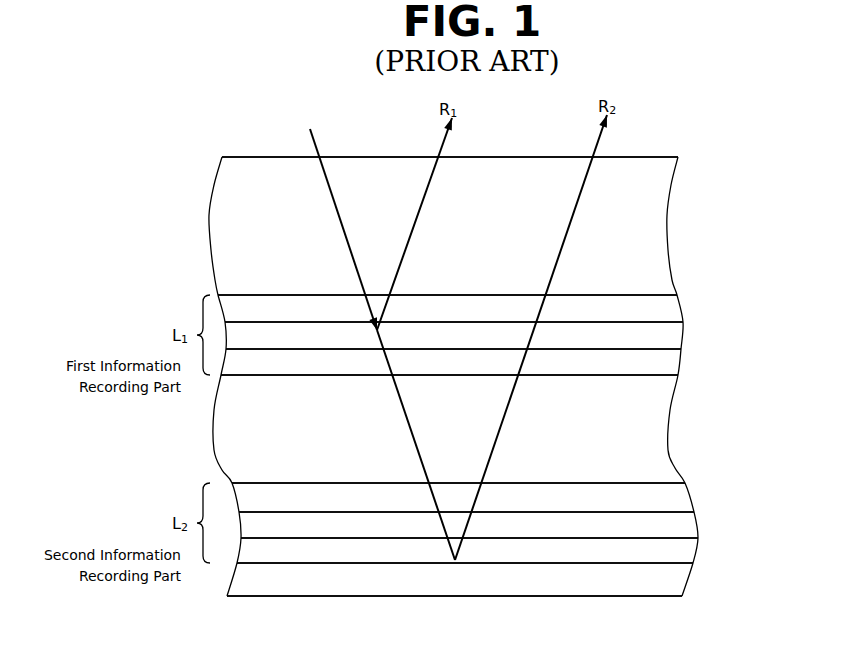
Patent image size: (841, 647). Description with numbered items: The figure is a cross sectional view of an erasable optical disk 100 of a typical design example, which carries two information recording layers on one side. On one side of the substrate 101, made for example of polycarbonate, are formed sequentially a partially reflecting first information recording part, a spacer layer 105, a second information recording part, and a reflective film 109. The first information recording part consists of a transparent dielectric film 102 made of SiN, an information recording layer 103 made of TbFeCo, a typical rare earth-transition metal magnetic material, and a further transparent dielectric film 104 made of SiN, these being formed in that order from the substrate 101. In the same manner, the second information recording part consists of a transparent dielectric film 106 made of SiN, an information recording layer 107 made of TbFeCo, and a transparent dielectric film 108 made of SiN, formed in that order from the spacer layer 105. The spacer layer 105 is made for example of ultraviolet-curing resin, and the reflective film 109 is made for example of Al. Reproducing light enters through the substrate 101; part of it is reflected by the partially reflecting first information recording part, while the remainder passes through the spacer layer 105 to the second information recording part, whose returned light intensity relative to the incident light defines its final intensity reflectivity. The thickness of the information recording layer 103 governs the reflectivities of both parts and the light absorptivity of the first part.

The optical disk 100 is at (667, 140).
The substrate 101 is at (655, 231).
The transparent dielectric film 102 is at (655, 317).
The information recording layer 103 is at (655, 344).
The transparent dielectric film 104 is at (655, 371).
The spacer layer 105 is at (655, 412).
The transparent dielectric film 106 is at (655, 507).
The information recording layer 107 is at (655, 534).
The transparent dielectric film 108 is at (655, 561).
The reflective film 109 is at (655, 589).